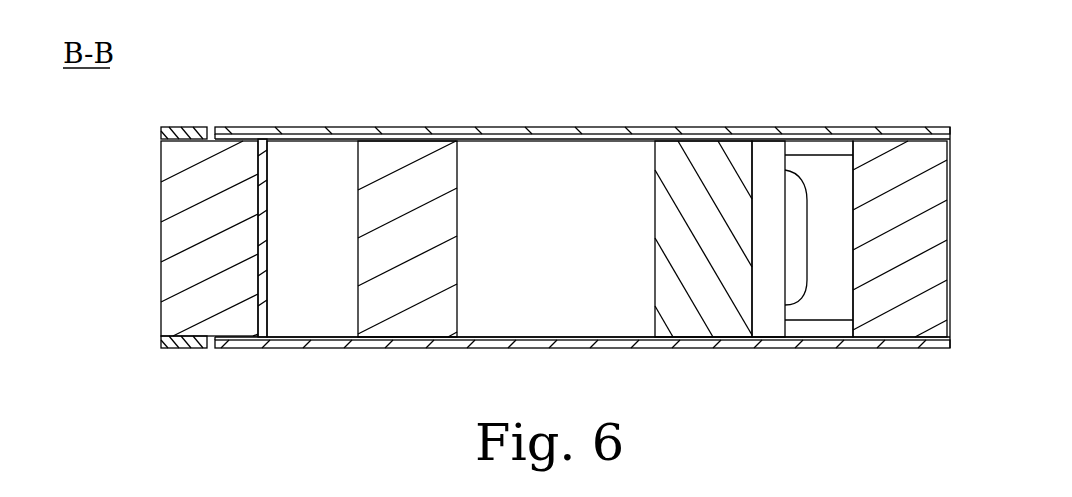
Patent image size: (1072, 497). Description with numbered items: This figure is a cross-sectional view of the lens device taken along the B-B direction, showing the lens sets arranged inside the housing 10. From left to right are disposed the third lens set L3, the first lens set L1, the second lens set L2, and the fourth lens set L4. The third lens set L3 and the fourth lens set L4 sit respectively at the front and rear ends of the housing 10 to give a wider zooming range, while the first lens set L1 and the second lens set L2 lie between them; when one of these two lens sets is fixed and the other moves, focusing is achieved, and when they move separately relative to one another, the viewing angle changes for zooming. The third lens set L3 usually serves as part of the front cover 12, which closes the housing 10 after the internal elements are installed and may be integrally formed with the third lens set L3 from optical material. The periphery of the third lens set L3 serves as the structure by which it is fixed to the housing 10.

The housing 10 is at (912, 345).
The front cover 12 is at (188, 130).
The first lens set L1 is at (407, 155).
The second lens set L2 is at (701, 155).
The third lens set L3 is at (168, 240).
The fourth lens set L4 is at (942, 220).